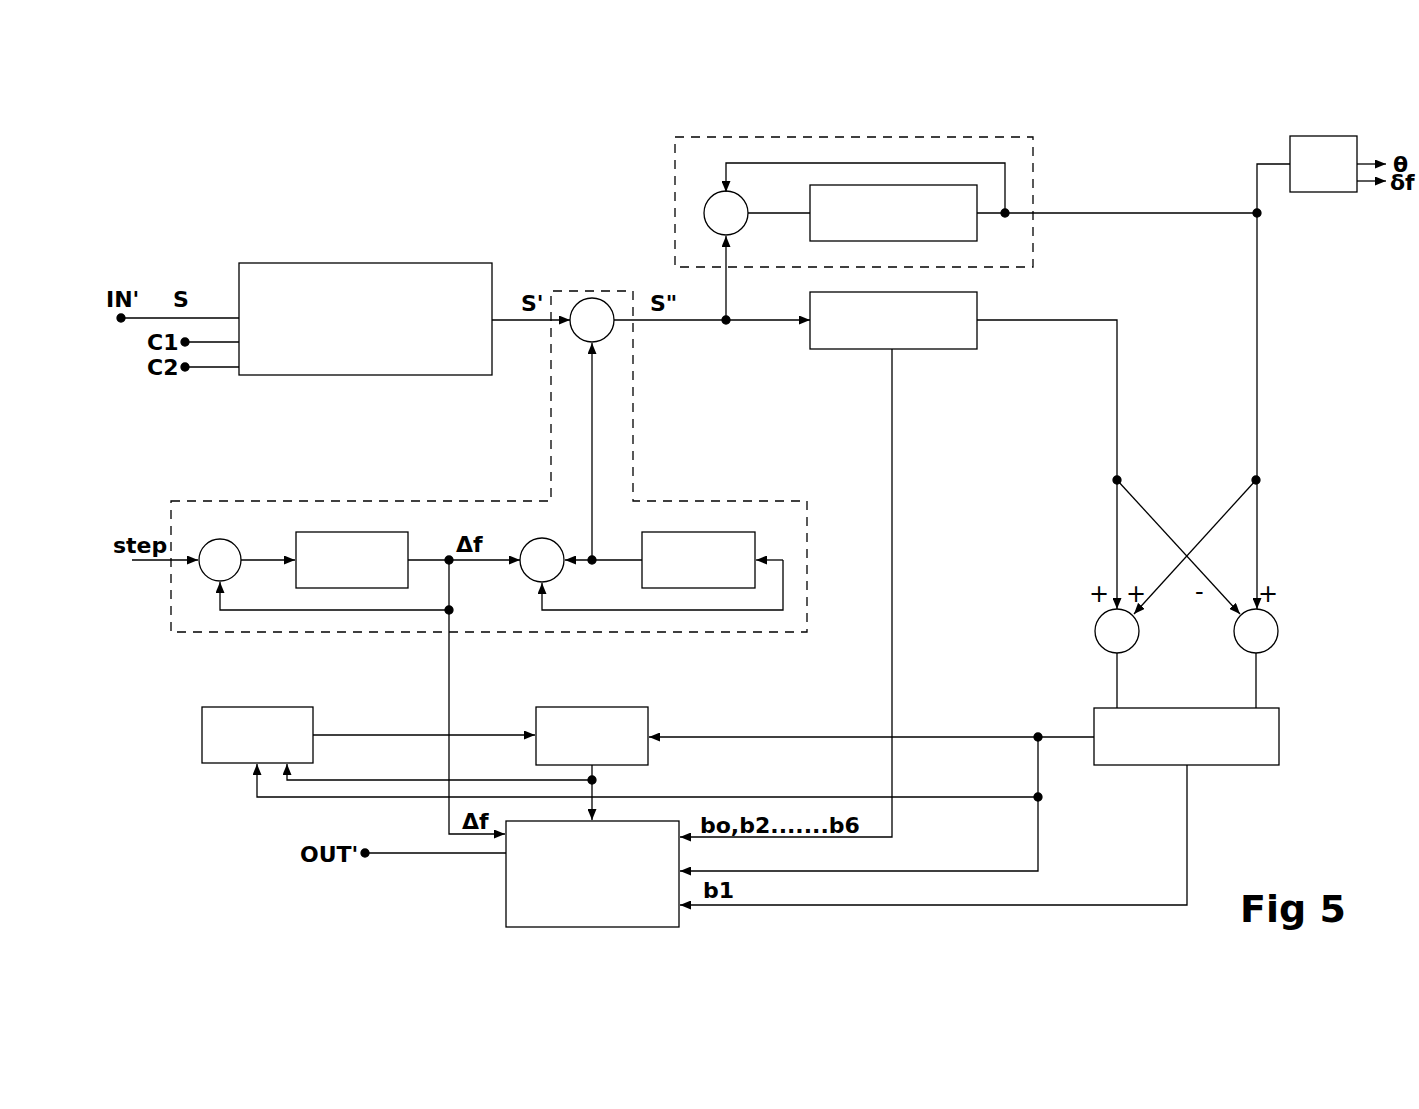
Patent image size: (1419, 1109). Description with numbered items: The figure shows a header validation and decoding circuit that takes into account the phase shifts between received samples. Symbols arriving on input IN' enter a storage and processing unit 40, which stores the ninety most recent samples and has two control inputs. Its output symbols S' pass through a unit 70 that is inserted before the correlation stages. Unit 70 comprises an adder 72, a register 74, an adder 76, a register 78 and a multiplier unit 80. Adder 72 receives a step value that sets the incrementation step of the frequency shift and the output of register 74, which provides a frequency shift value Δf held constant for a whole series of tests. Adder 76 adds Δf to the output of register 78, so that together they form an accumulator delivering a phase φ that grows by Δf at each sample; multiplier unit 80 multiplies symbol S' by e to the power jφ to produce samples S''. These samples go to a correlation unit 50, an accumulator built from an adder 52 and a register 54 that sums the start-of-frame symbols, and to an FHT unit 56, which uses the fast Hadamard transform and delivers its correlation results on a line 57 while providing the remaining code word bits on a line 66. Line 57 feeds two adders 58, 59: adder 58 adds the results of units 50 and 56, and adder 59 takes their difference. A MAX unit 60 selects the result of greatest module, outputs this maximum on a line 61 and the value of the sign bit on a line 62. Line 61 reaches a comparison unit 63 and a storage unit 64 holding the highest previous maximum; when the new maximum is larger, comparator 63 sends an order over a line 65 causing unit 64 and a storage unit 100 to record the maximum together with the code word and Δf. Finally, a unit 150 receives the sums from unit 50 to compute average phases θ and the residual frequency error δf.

The storage and processing unit 40 is at (345, 263).
The correlation unit 50 is at (1033, 180).
The adder 52 is at (740, 232).
The register 54 is at (958, 241).
The FHT unit 56 is at (945, 349).
The line 57 is at (1117, 408).
The adder 58 is at (1095, 631).
The adder 59 is at (1276, 620).
The MAX unit 60 is at (1279, 745).
The line 61 is at (1062, 737).
The line 62 is at (1187, 851).
The comparison unit 63 is at (622, 707).
The storage unit 64 is at (202, 735).
The line 65 is at (380, 780).
The line 66 is at (892, 551).
The unit 70 is at (582, 290).
The adder 72 is at (204, 546).
The register 74 is at (308, 532).
The adder 76 is at (536, 539).
The register 78 is at (720, 532).
The multiplier unit 80 is at (576, 336).
The storage unit M 100 is at (506, 895).
The phase evaluation unit 150 is at (1310, 136).